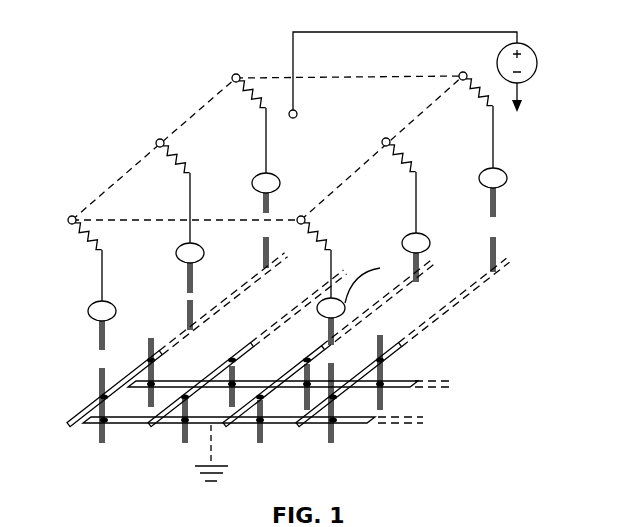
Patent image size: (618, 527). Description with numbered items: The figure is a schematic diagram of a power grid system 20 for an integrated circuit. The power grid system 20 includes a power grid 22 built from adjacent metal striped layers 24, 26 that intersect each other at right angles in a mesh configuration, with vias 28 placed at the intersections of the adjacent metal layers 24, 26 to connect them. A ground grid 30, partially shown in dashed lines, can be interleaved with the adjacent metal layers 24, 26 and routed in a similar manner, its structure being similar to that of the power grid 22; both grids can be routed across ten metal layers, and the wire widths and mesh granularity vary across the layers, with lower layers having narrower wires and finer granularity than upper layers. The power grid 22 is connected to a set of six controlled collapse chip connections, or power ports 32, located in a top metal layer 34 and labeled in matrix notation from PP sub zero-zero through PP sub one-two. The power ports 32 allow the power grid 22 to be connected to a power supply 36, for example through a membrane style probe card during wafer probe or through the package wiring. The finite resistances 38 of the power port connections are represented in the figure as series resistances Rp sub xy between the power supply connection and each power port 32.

The power grid system 20 is at (105, 105).
The power grid 22 is at (403, 375).
The metal striped layer 24 is at (125, 427).
The metal striped layer 26 is at (77, 413).
The via 28 is at (263, 400).
The ground grid 30 is at (195, 467).
The power port 32 is at (89, 311).
The top metal layer 34 is at (200, 110).
The power supply 36 is at (533, 45).
The finite resistance 38 is at (391, 147).